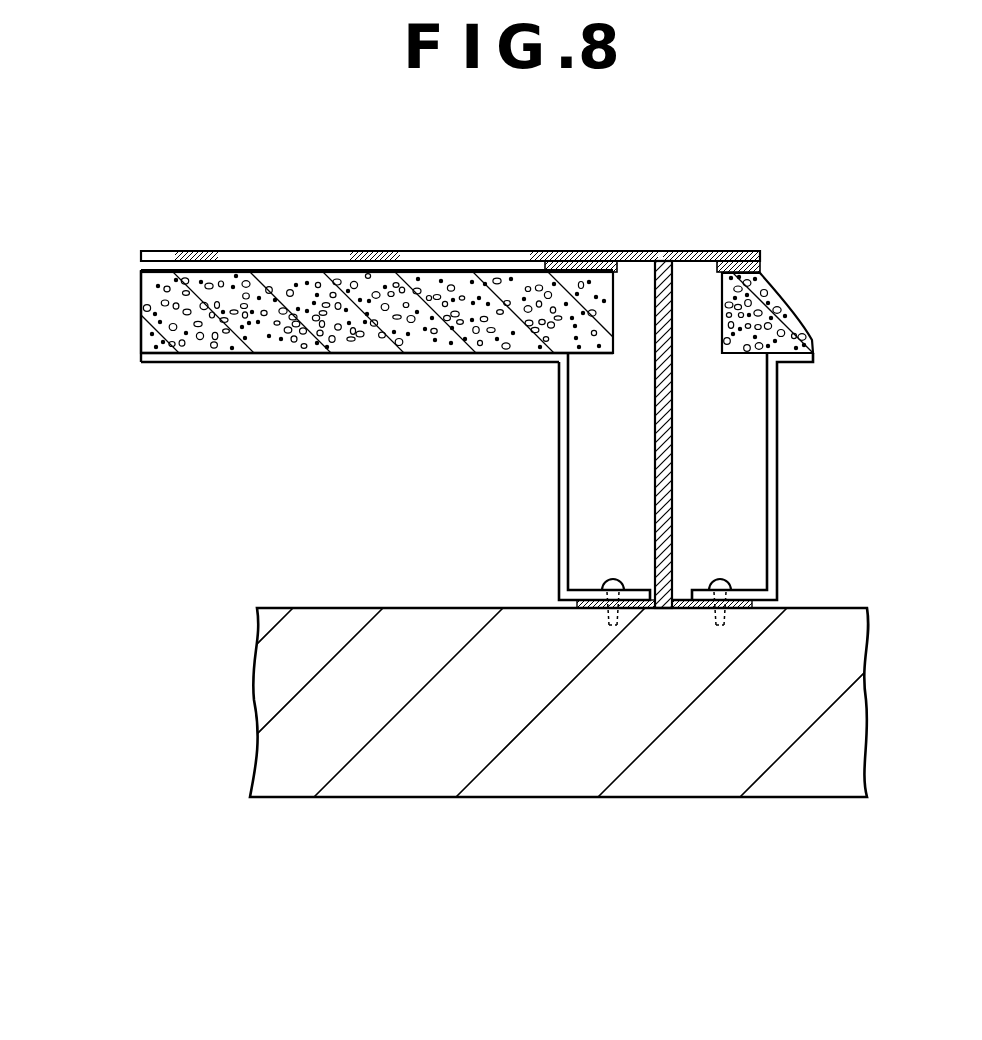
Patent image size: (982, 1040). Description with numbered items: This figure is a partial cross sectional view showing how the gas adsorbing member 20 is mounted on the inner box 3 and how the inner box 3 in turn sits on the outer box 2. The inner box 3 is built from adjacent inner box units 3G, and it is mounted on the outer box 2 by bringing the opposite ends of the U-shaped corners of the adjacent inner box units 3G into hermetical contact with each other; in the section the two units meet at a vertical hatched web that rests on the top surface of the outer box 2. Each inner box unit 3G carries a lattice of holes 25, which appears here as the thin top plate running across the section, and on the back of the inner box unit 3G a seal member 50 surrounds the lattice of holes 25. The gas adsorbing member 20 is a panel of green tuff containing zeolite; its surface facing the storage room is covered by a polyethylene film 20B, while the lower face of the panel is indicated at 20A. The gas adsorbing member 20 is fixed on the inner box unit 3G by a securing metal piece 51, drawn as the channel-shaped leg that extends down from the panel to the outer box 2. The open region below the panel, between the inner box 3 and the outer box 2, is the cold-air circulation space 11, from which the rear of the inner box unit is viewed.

The outer box 2 is at (457, 758).
The inner box 3 is at (645, 187).
The inner box unit 3G is at (637, 251).
The cold-air circulation space 11 is at (310, 513).
The gas adsorbing member 20 is at (138, 297).
The lower face sheet 20A is at (293, 335).
The polyethylene film 20B is at (299, 270).
The lattice of holes 25 is at (457, 251).
The seal member 50 is at (577, 251).
The securing metal piece 51 is at (558, 430).